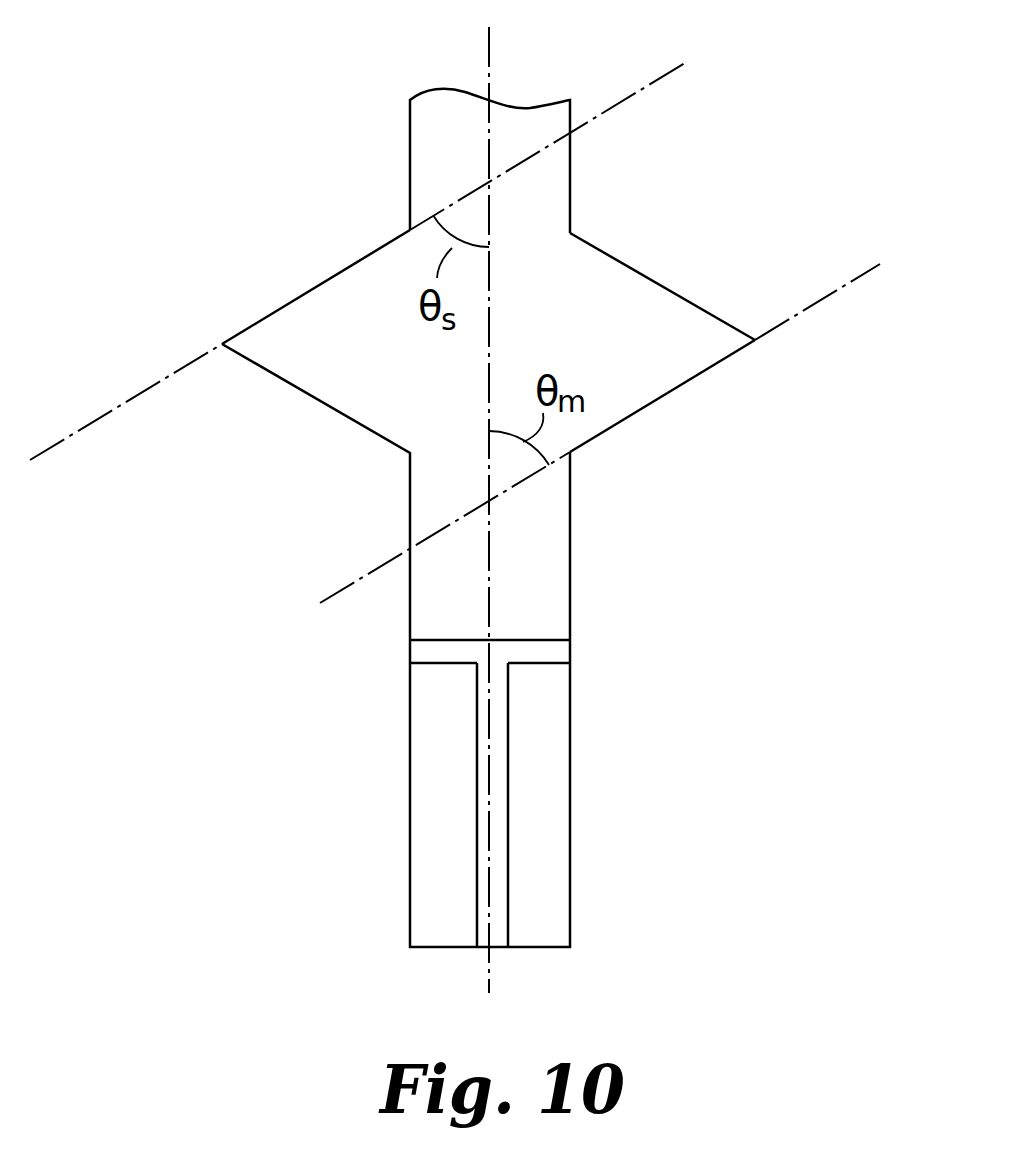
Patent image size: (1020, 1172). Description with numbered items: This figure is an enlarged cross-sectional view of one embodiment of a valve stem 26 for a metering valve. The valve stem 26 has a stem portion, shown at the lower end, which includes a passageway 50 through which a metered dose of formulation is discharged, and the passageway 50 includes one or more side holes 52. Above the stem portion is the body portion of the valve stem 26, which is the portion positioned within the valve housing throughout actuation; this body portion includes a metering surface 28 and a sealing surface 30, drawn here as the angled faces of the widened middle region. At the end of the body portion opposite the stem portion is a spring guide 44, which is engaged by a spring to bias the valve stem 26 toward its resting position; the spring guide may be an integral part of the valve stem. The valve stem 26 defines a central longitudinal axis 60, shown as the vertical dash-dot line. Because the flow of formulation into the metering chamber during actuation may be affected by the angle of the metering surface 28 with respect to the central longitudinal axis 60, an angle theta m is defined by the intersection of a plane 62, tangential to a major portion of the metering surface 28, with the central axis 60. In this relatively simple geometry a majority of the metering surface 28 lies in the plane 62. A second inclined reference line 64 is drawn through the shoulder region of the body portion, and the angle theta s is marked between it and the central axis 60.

The valve stem 26 is at (477, 549).
The metering surface 28 is at (652, 405).
The sealing surface 30 is at (312, 289).
The spring guide 44 is at (427, 155).
The passageway 50 is at (502, 932).
The side holes 52 is at (558, 650).
The central longitudinal axis 60 is at (487, 50).
The plane 62 is at (815, 304).
The shoulder edge reference line 64 is at (633, 95).